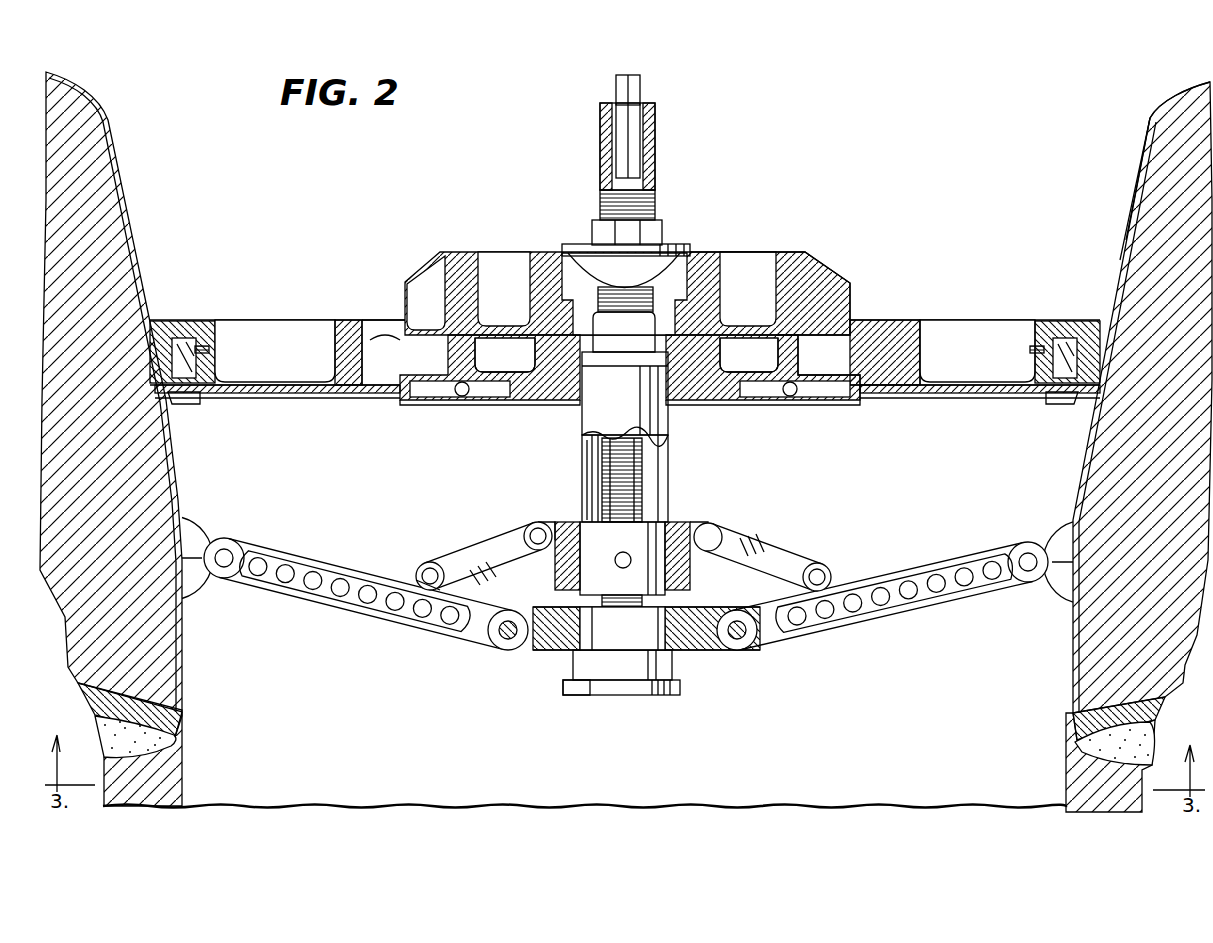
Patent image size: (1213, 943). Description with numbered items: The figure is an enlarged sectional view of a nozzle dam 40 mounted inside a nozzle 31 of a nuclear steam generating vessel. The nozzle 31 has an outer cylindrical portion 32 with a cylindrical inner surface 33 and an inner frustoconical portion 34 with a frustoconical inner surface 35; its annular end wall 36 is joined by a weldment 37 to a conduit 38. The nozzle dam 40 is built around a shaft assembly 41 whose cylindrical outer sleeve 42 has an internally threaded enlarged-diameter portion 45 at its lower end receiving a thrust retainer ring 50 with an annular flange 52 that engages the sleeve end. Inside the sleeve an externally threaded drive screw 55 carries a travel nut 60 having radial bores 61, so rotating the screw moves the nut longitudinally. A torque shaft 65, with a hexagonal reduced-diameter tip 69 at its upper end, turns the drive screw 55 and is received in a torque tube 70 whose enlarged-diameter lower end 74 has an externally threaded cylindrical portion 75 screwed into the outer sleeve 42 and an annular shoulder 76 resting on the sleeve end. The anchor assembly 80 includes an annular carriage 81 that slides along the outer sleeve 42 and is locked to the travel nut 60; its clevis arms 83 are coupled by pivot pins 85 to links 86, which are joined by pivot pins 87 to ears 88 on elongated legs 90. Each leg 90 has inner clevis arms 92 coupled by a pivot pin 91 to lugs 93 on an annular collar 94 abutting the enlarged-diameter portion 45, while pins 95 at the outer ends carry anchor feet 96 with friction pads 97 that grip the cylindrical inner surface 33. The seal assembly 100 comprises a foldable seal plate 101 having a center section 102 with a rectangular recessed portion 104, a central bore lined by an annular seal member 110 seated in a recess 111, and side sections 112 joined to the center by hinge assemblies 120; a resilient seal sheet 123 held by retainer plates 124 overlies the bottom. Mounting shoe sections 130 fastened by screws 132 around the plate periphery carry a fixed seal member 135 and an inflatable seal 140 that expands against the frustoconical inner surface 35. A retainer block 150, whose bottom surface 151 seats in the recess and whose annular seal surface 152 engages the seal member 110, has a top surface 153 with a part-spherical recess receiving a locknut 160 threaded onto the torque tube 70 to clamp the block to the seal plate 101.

The nozzle 31 is at (1124, 140).
The outer cylindrical portion 32 is at (1095, 677).
The cylindrical inner surface 33 is at (1071, 636).
The inner frustoconical portion 34 is at (1160, 190).
The frustoconical inner surface 35 is at (1135, 230).
The annular end wall 36 is at (1150, 705).
The weldment 37 is at (1140, 748).
The conduit 38 is at (1085, 783).
The nozzle dam 40 is at (798, 118).
The shaft assembly 41 is at (568, 454).
The outer sleeve 42 is at (670, 468).
The enlarged-diameter portion 45 is at (586, 664).
The thrust retainer ring 50 is at (582, 706).
The annular flange 52 is at (640, 696).
The drive screw 55 is at (644, 500).
The travel nut 60 is at (646, 532).
The radial bores 61 is at (618, 556).
The torque shaft 65 is at (640, 172).
The hexagonal reduced-diameter tip 69 is at (642, 92).
The torque tube 70 is at (602, 152).
The enlarged-diameter lower end 74 is at (614, 342).
The annular shoulder 76 is at (628, 366).
The externally threaded cylindrical portion 75 is at (602, 208).
The anchor assembly 80 is at (870, 540).
The carriage 81 is at (688, 576).
The clevis arms 83 is at (560, 522).
The pivot pin 85 is at (532, 530).
The links 86 is at (480, 552).
The pivot pins 87 is at (429, 568).
The ears 88 is at (406, 578).
The legs 90 is at (332, 602).
The pivot pin 91 is at (744, 640).
The clevis arms 92 is at (739, 612).
The lugs 93 is at (722, 652).
The annular collar 94 is at (690, 652).
The pins 95 is at (230, 552).
The anchor feet 96 is at (207, 528).
The friction pad 97 is at (188, 598).
The seal assembly 100 is at (307, 280).
The seal plate 101 is at (921, 314).
The center section 102 is at (718, 396).
The recessed portion 104 is at (388, 344).
The annular seal member 110 is at (546, 394).
The recess 111 is at (708, 346).
The side sections 112 is at (252, 332).
The hinge assemblies 120 is at (435, 410).
The seal sheet 123 is at (482, 400).
The retainer plates 124 is at (292, 396).
The mounting shoe sections 130 is at (1070, 328).
The screws 132 is at (1034, 348).
The fixed seal member 135 is at (195, 330).
The inflatable seal 140 is at (186, 400).
The retainer block 150 is at (470, 262).
The bottom surface 151 is at (830, 340).
The annular seal surface 152 is at (548, 345).
The top surface 153 is at (770, 254).
The locknut 160 is at (685, 240).